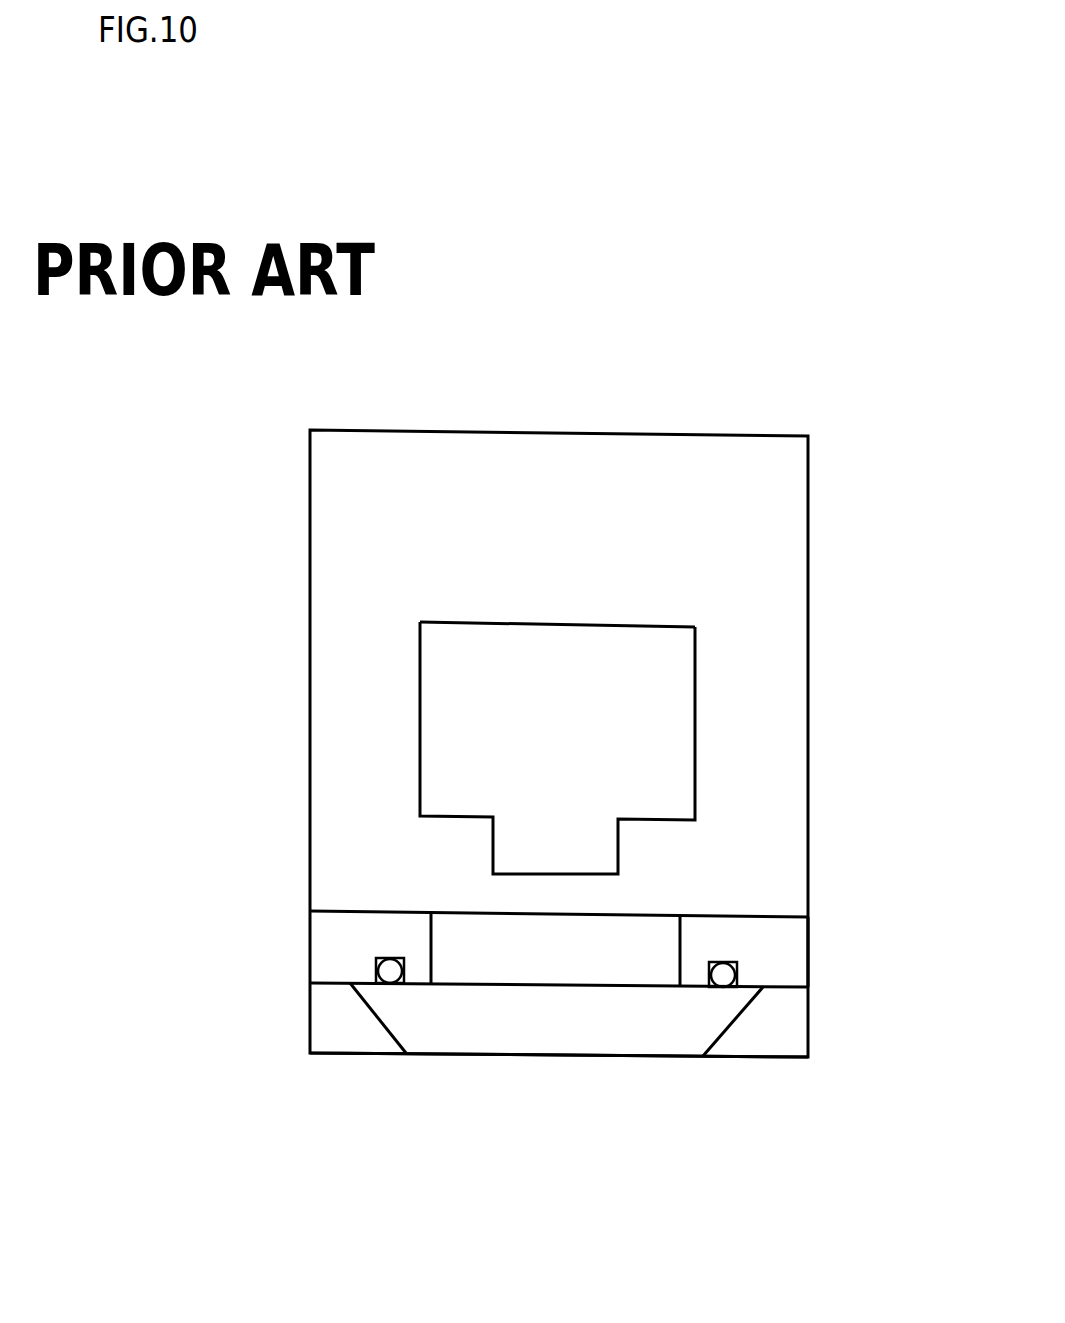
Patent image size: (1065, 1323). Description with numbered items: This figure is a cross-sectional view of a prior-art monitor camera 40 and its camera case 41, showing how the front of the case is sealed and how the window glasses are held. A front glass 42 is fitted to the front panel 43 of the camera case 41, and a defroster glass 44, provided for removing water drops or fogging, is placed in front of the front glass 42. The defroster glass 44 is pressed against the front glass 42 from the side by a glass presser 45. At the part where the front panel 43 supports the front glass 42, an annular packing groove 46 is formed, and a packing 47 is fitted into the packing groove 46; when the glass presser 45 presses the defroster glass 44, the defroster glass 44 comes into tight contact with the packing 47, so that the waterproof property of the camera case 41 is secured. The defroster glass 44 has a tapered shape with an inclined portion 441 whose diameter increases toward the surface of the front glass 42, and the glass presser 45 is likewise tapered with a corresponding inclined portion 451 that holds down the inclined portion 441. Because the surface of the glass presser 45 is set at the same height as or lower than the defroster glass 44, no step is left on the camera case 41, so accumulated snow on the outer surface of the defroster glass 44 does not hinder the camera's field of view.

The prior art ink cartridge 40 is at (737, 412).
The camera case 41 is at (558, 432).
The front glass 42 is at (655, 942).
The front panel 43 is at (808, 946).
The defroster glass 44 is at (553, 1057).
The glass presser 45 is at (792, 1057).
The packing groove 46 is at (392, 972).
The packing 47 is at (376, 966).
The inclined portion 441 is at (733, 1020).
The inclined portion 451 is at (377, 1020).